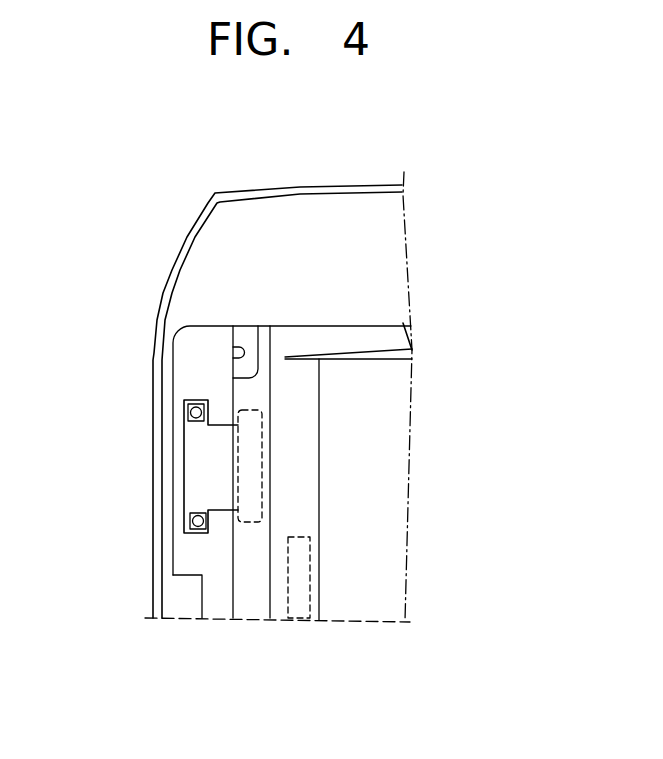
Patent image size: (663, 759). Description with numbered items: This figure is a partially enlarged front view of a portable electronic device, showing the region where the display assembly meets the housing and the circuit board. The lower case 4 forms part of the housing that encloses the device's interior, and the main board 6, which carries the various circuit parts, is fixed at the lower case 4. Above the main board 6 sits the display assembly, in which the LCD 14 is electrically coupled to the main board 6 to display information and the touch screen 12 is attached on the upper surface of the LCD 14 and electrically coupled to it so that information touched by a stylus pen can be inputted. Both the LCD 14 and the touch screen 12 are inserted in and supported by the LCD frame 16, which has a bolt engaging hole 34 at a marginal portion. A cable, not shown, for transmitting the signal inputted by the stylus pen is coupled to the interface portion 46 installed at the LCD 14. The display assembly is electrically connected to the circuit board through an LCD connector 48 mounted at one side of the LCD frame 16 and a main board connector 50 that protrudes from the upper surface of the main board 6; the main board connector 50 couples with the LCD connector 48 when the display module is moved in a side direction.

The lower case 4 is at (162, 294).
The main board 6 is at (197, 375).
The touch screen 12 is at (393, 396).
The LCD 14 is at (303, 463).
The LCD frame 16 is at (253, 559).
The bolt engaging hole 34 is at (240, 352).
The interface portion 46 is at (300, 600).
The LCD connector 48 is at (250, 450).
The main board connector 50 is at (202, 482).